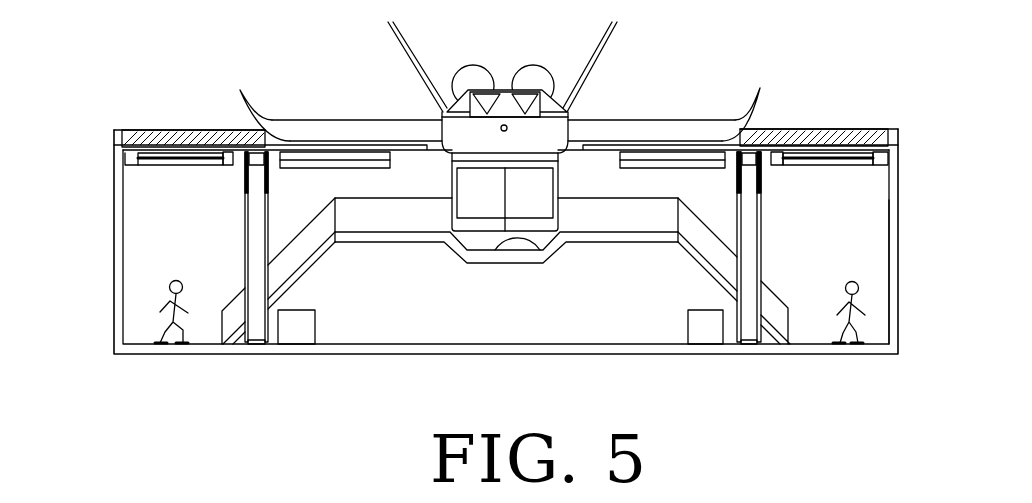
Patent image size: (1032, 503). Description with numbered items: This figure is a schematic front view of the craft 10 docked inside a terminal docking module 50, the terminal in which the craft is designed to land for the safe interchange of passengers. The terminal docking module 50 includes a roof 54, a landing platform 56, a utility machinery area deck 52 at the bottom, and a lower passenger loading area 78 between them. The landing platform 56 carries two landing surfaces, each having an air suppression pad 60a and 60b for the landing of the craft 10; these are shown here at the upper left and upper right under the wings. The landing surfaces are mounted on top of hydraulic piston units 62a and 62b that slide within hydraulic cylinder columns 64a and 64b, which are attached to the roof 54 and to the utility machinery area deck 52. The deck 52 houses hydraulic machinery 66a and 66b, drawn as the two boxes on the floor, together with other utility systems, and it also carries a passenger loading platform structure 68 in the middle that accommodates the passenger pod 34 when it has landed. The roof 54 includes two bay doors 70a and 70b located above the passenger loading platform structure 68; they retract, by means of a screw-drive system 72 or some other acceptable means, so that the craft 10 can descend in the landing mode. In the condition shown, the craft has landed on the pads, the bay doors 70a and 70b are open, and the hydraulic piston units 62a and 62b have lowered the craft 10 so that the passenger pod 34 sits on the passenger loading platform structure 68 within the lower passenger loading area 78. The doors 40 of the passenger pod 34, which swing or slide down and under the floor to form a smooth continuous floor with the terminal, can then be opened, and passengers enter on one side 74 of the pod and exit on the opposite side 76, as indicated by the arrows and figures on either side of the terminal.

The craft 10 is at (500, 91).
The passenger pod 34 is at (562, 160).
The doors 40 is at (446, 211).
The terminal docking module 50 is at (177, 367).
The utility machinery area deck 52 is at (472, 343).
The roof 54 is at (160, 167).
The landing platform 56 is at (873, 128).
The air suppression pad 60a is at (215, 133).
The air suppression pad 60b is at (822, 133).
The hydraulic piston unit 62a is at (257, 202).
The hydraulic piston unit 62b is at (750, 208).
The hydraulic cylinder column 64a is at (247, 219).
The hydraulic cylinder column 64b is at (762, 223).
The hydraulic machinery 66a is at (300, 330).
The hydraulic machinery 66b is at (708, 330).
The passenger loading platform structure 68 is at (540, 253).
The bay door 70a is at (333, 160).
The bay door 70b is at (672, 160).
The screw-drive system 72 is at (150, 153).
The one side 74 is at (778, 270).
The opposite side 76 is at (232, 272).
The lower passenger loading area 78 is at (866, 254).